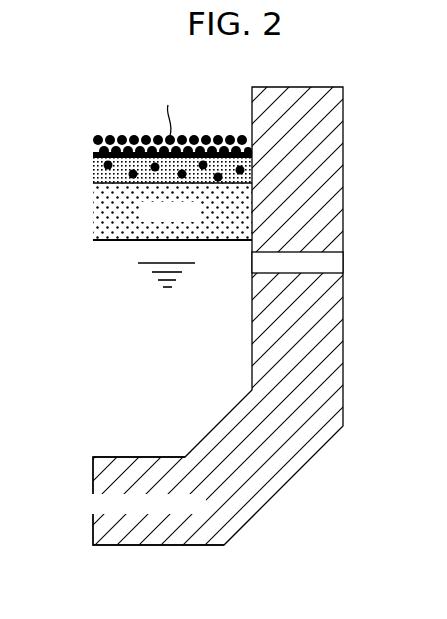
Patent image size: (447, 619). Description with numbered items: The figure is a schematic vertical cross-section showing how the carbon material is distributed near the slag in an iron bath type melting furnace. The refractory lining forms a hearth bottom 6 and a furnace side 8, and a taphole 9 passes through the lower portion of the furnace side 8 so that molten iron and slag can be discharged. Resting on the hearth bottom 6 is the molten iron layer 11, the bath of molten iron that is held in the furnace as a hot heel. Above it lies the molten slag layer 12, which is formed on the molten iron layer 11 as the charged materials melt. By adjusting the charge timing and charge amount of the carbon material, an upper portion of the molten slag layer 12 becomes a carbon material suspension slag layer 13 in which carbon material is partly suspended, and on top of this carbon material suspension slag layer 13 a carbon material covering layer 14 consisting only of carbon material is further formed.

The hearth bottom 6 is at (191, 545).
The furnace side 8 is at (343, 162).
The taphole 9 is at (343, 263).
The molten iron layer 11 is at (48, 240).
The molten slag layer 12 is at (48, 159).
The carbon material suspension slag layer 13 is at (87, 160).
The carbon material covering layer 14 is at (87, 138).